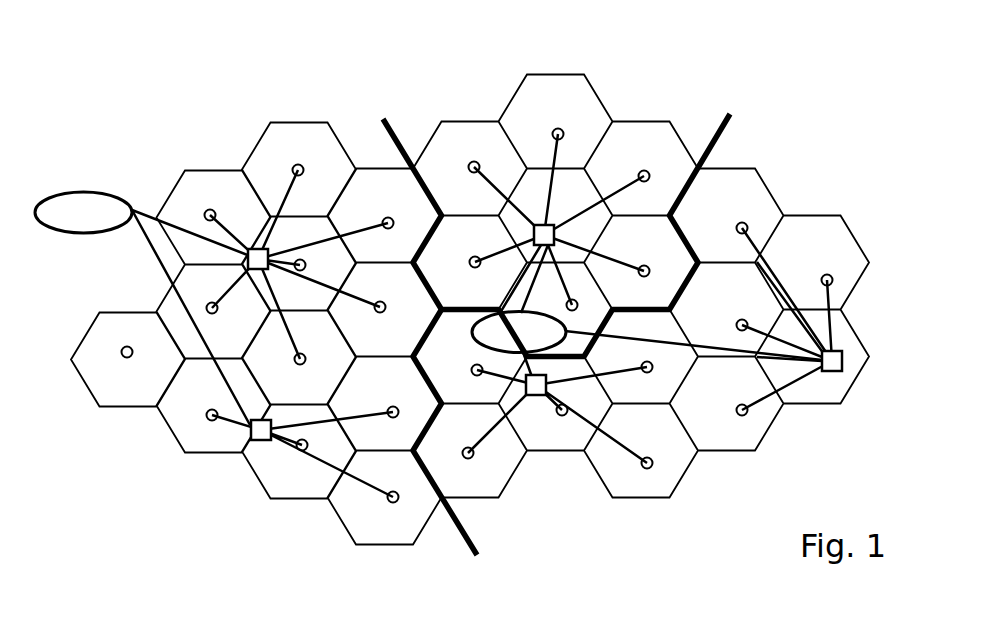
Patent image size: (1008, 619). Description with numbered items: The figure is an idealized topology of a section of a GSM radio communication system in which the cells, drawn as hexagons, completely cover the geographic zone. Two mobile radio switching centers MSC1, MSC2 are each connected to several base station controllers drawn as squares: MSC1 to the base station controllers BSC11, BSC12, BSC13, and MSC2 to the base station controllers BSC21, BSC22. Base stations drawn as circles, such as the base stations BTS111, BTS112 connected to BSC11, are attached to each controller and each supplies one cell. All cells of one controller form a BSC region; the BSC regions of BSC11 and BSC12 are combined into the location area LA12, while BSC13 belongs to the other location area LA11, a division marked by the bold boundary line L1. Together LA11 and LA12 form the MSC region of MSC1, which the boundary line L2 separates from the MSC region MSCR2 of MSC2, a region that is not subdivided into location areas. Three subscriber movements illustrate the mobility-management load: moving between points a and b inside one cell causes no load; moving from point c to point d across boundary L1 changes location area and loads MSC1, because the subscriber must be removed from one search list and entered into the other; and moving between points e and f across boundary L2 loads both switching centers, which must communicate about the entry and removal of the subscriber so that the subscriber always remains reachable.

The MSC region MSCR2 is at (186, 158).
The mobile radio switching center MSC2 is at (92, 250).
The mobile radio switching center MSC1 is at (647, 345).
The base station controller BSC22 is at (261, 249).
The base station controller BSC21 is at (393, 503).
The base station controller BSC13 is at (554, 228).
The base station controller BSC11 is at (537, 396).
The base station controller BSC12 is at (834, 371).
The base station BTS111 is at (647, 469).
The base station BTS112 is at (647, 373).
The location area LA11 is at (480, 99).
The location area LA12 is at (816, 199).
The boundary line L1 is at (711, 148).
The boundary line L2 is at (456, 523).
The point a is at (658, 252).
The point b is at (665, 250).
The point c is at (692, 313).
The point d is at (698, 311).
The point e is at (435, 263).
The point f is at (440, 263).